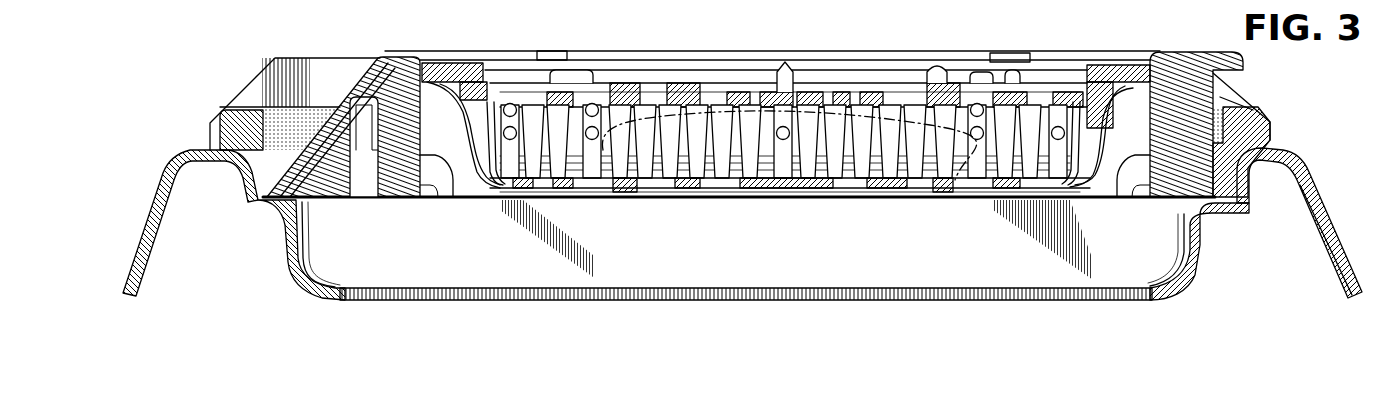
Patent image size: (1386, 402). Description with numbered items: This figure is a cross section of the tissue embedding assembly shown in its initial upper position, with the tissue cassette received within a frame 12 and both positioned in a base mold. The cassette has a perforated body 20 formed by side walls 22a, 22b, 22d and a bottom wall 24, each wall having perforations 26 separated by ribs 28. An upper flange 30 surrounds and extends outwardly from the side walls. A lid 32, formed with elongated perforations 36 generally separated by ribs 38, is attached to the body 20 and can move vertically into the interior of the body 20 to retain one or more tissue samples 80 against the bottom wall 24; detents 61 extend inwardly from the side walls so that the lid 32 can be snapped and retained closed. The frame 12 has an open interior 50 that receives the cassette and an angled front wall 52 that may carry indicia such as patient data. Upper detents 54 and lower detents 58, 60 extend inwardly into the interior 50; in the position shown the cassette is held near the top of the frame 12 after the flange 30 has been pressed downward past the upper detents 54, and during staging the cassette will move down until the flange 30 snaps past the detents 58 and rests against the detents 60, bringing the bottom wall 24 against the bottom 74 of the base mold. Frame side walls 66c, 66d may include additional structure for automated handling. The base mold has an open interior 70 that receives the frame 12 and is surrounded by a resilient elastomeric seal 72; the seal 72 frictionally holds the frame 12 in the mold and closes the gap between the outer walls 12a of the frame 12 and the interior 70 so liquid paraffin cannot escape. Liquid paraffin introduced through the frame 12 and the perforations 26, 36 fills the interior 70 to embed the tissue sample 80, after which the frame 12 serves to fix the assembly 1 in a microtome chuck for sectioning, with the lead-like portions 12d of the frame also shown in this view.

The semiconductor device 1 is at (1310, 163).
The frame 12 is at (1197, 50).
The outer walls 12a is at (263, 193).
The second lead 12d is at (1240, 163).
The perforated body 20 is at (593, 183).
The side wall 22a is at (713, 123).
The side wall 22b is at (1108, 97).
The side wall 22d is at (462, 97).
The bottom wall 24 is at (773, 187).
The perforations 26 is at (997, 163).
The ribs 28 is at (713, 160).
The upper flange 30 is at (457, 70).
The lid 32 is at (807, 93).
The perforations 36 is at (917, 100).
The ribs 38 is at (693, 103).
The open interior 50 is at (433, 123).
The angled front wall 52 is at (327, 100).
The upper detents 54 is at (553, 57).
The lower detents 58 is at (440, 177).
The lower detents 60 is at (433, 197).
The detents 61 is at (567, 77).
The side wall 66c is at (1190, 93).
The side wall 66d is at (397, 187).
The open interior 70 is at (796, 240).
The resilient elastomeric seal 72 is at (230, 110).
The bottom 74 is at (750, 287).
The tissue sample 80 is at (900, 117).